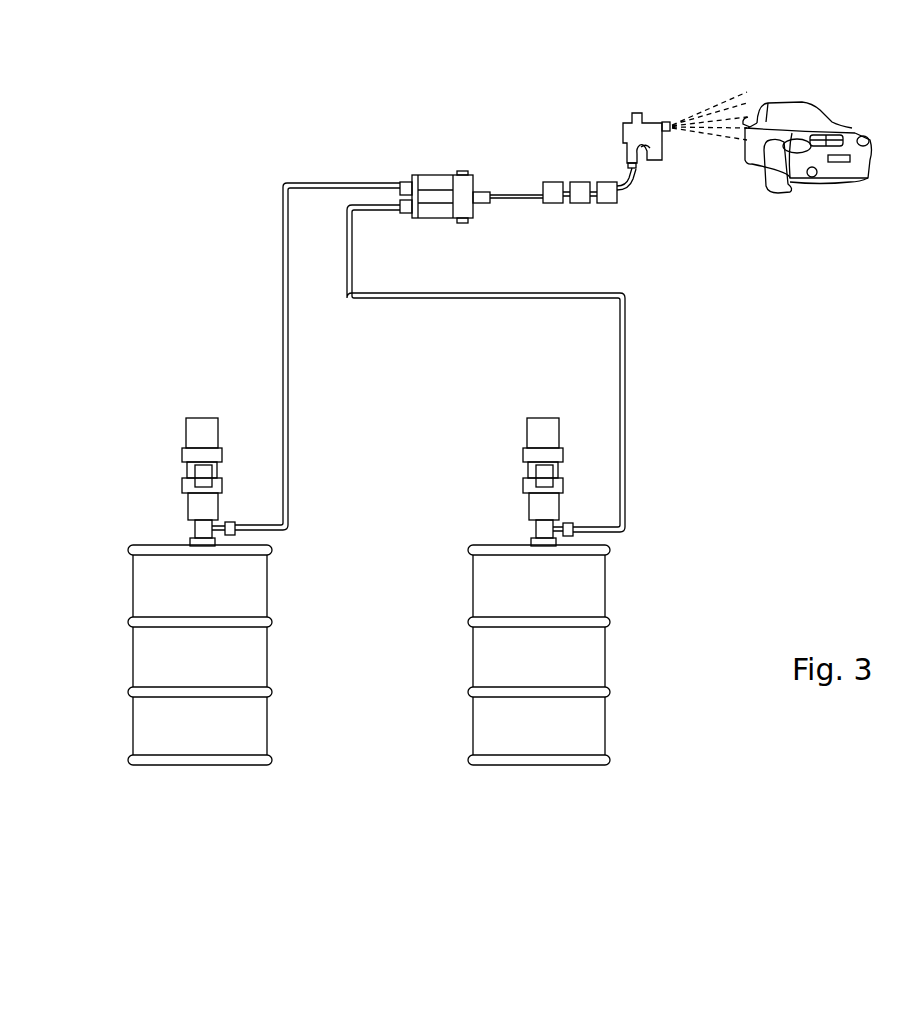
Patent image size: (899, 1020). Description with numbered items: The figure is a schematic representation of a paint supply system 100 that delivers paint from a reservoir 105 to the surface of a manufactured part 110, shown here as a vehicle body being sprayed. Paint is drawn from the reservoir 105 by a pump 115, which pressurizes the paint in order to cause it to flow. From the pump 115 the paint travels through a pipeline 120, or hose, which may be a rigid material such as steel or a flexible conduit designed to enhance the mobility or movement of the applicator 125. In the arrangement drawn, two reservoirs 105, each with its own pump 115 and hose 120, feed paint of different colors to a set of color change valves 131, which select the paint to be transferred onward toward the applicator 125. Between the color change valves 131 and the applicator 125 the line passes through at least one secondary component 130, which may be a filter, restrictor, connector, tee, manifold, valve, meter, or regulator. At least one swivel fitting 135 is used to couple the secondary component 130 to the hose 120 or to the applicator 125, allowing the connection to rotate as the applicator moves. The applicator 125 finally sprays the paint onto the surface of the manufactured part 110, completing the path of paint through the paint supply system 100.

The paint supply system 100 is at (199, 113).
The reservoir 105 is at (228, 657).
The manufactured part 110 is at (785, 108).
The pump 115 is at (200, 437).
The pipeline 120 is at (283, 352).
The applicator 125 is at (645, 130).
The secondary component 130 is at (551, 182).
The color change valves 131 is at (437, 183).
The swivel fitting 135 is at (580, 204).